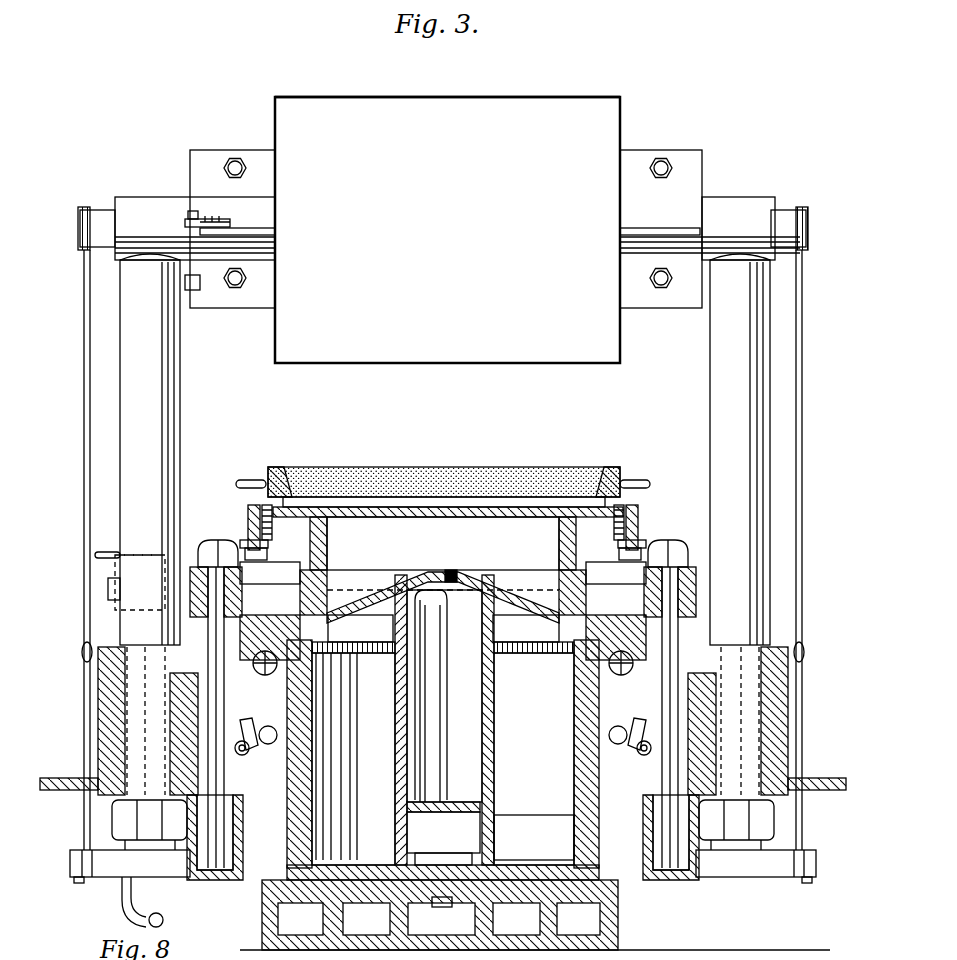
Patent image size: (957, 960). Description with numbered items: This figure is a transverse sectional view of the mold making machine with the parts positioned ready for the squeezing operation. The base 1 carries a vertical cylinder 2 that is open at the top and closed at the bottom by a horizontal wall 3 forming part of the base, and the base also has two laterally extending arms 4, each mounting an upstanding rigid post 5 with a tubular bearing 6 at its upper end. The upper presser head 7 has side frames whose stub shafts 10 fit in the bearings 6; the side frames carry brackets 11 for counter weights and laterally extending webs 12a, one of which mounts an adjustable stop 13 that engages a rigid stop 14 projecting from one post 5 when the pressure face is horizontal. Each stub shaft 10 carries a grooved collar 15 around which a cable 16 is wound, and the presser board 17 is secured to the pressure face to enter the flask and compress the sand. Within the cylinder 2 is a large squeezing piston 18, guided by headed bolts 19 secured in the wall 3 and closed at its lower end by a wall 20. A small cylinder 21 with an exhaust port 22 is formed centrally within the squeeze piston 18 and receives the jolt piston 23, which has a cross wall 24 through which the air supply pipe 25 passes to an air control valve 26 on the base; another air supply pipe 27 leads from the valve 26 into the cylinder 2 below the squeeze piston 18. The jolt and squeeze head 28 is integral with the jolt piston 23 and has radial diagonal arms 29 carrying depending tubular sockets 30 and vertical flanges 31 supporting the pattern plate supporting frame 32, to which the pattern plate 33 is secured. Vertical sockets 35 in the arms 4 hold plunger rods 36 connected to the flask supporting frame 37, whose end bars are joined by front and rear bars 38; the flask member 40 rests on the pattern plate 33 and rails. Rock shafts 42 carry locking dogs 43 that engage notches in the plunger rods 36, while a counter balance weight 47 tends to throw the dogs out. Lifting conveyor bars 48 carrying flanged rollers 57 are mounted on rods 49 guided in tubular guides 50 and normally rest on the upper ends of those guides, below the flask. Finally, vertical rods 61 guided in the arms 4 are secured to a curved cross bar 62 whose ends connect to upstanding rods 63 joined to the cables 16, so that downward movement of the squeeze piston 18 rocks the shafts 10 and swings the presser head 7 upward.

The base 1 is at (262, 920).
The vertical cylinder 2 is at (300, 752).
The horizontal wall 3 is at (372, 896).
The horizontal extensions or arms 4 is at (110, 722).
The rigid post 5 is at (160, 432).
The tubular bearing 6 is at (152, 205).
The upper presser head 7 is at (396, 97).
The axle or stub shaft 10 is at (104, 212).
The brackets or webs 11 is at (208, 160).
The laterally extending web 12a is at (250, 228).
The adjustable stop 13 is at (195, 210).
The rigid stop 14 is at (196, 292).
The grooved rigid collar 15 is at (82, 222).
The cable 16 is at (92, 380).
The presser board 17 is at (545, 115).
The squeezing piston 18 is at (316, 812).
The headed bolt 19 is at (438, 918).
The lower wall 20 is at (358, 866).
The small cylinder 21 is at (496, 752).
The exhaust port 22 is at (496, 834).
The jolt piston 23 is at (462, 638).
The cross wall 24 is at (450, 812).
The air supply pipe 25 is at (448, 728).
The air control valve 26 is at (115, 590).
The air supply pipe 27 is at (136, 912).
The jolt and squeeze head 28 is at (372, 596).
The radial diagonal arm 29 is at (282, 586).
The tubular socket 30 is at (720, 626).
The vertical flange 31 is at (320, 592).
The pattern plate supporting frame 32 is at (322, 540).
The pattern plate 33 is at (470, 517).
The vertical socket 35 is at (262, 652).
The plunger rod 36 is at (260, 675).
The flask supporting frame 37 is at (200, 580).
The front and rear bars 38 is at (292, 500).
The flask member 40 is at (262, 480).
The rock shaft 42 is at (244, 756).
The locking dog 43 is at (260, 722).
The counter balance weight 47 is at (330, 726).
The lifting conveyor bar 48 is at (258, 515).
The vertically reciprocating rod 49 is at (245, 521).
The depending tubular guide 50 is at (262, 556).
The flanged roller 57 is at (262, 525).
The vertical rod 61 is at (262, 830).
The horizontal cross bar 62 is at (78, 868).
The upstanding rod 63 is at (92, 702).